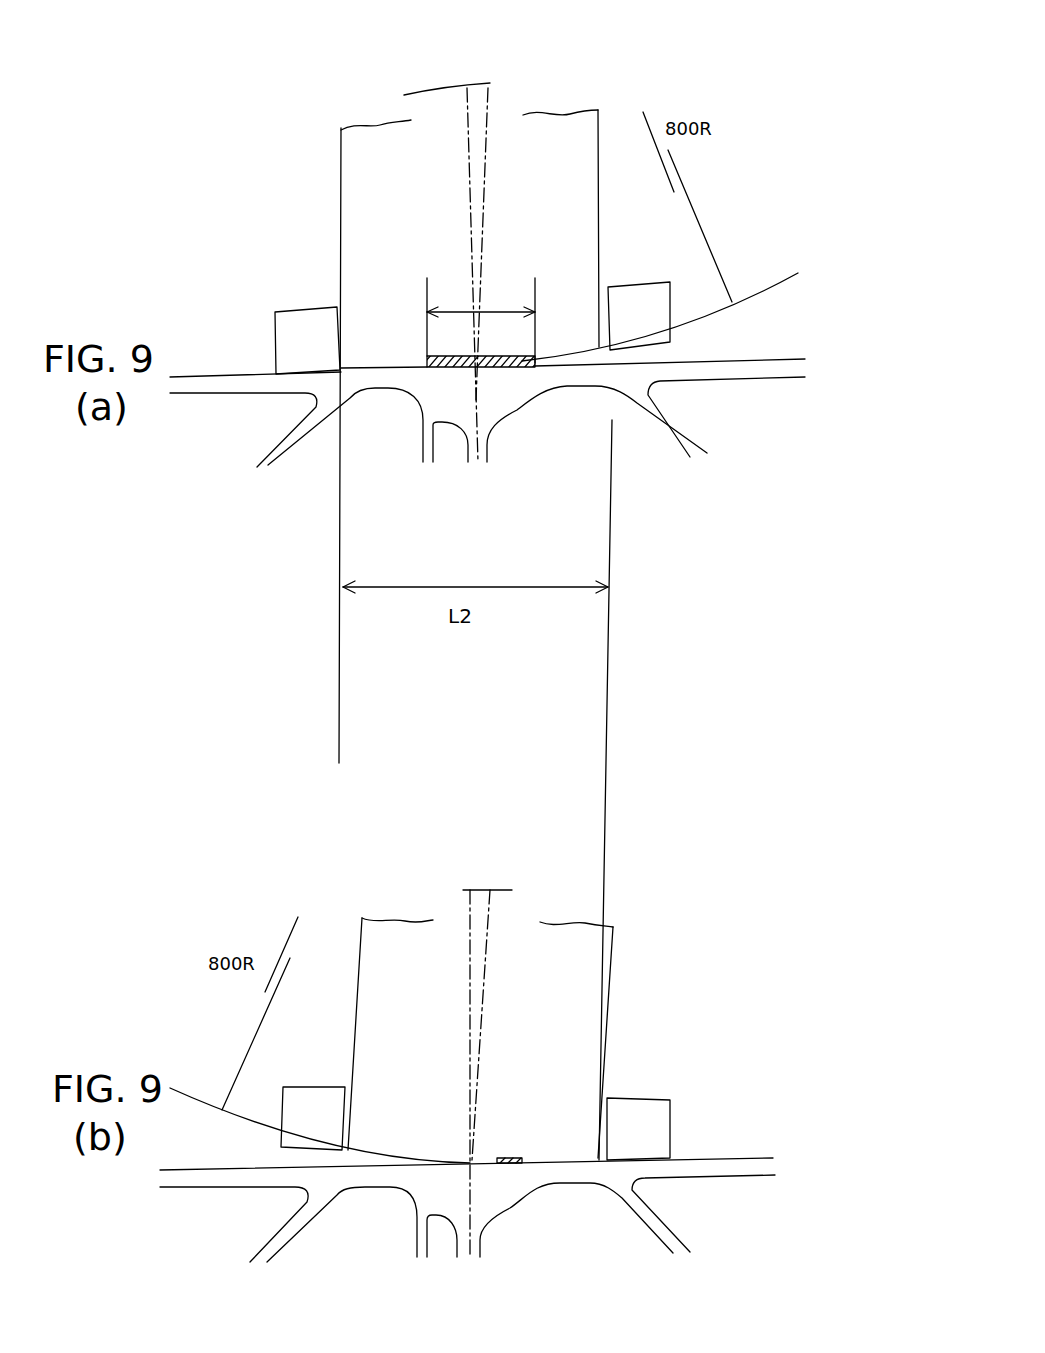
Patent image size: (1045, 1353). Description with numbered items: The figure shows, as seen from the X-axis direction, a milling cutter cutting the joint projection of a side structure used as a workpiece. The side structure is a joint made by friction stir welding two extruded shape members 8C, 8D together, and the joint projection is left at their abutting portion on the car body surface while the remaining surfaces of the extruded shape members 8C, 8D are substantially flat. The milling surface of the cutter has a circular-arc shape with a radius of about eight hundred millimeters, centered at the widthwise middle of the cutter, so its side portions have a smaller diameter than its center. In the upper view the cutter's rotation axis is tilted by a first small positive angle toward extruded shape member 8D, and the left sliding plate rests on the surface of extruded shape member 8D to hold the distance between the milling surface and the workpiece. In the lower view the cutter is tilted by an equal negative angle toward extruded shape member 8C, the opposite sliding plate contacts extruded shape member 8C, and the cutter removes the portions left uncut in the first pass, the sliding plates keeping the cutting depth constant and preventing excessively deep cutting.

The extruded shape member 8C is at (517, 410).
The extruded shape member 8D is at (370, 388).